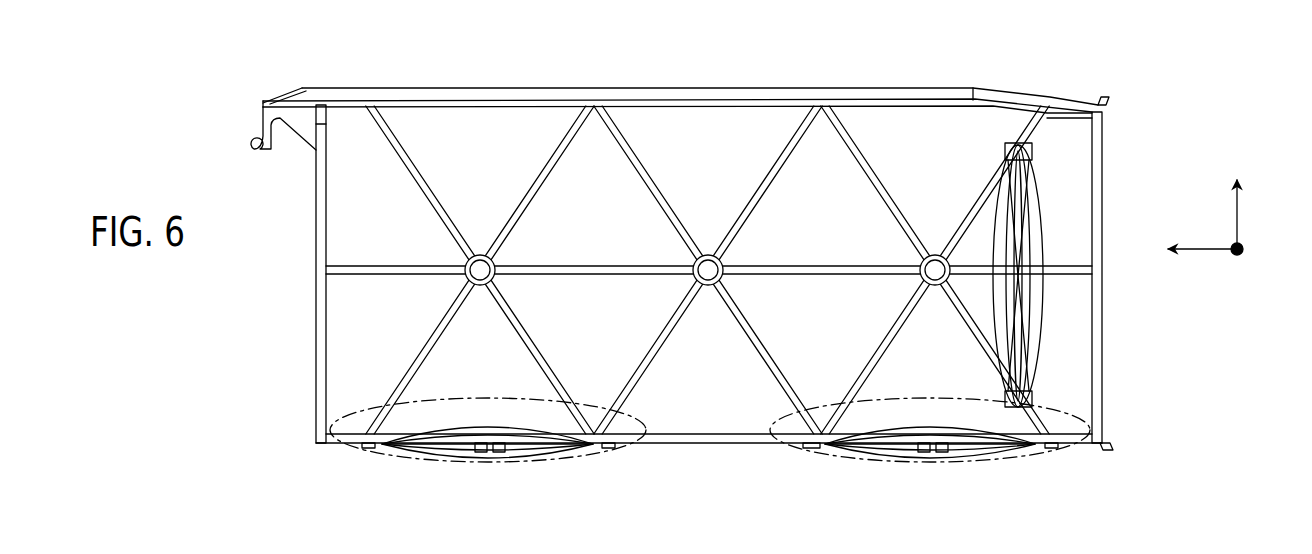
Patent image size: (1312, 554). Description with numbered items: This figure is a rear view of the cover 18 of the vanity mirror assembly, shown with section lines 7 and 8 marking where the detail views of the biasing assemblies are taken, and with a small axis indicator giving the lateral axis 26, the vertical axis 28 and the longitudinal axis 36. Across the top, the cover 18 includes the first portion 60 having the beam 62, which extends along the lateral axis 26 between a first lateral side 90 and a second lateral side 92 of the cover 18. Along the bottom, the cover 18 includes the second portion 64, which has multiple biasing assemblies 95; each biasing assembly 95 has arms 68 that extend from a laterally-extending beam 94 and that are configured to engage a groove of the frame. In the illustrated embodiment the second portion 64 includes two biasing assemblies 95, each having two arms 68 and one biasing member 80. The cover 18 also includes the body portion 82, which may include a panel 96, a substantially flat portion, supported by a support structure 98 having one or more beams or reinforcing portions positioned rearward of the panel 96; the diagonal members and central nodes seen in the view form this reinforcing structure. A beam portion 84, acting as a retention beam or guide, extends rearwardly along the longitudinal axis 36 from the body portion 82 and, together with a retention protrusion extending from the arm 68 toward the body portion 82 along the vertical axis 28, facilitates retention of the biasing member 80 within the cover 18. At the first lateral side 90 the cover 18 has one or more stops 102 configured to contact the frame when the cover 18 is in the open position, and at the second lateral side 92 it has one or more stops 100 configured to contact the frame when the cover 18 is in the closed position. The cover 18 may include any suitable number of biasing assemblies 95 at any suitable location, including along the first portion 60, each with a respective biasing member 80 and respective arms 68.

The section line 7- 7 is at (345, 463).
The section line 8- 8 is at (785, 463).
The cover 18 is at (1140, 81).
The lateral axis 26 is at (1208, 248).
The vertical axis 28 is at (1238, 220).
The longitudinal axis 36 is at (1241, 253).
The first portion 60 is at (962, 78).
The beam 62 is at (886, 103).
The second portion 64 is at (434, 512).
The arm 68 is at (410, 456).
The biasing member 80 is at (513, 446).
The body portion 82 is at (292, 230).
The beam portion 84 is at (462, 430).
The first lateral side 90 is at (207, 323).
The second lateral side 92 is at (1135, 286).
The beam 94 is at (706, 431).
The biasing assembly 95 is at (465, 481).
The panel 96 is at (355, 307).
The support structure 98 is at (317, 362).
The stop 100 is at (1108, 101).
The stop 102 is at (256, 150).